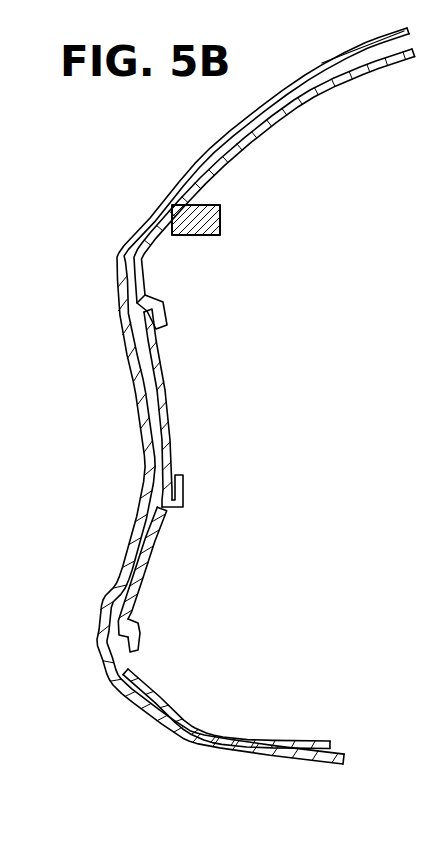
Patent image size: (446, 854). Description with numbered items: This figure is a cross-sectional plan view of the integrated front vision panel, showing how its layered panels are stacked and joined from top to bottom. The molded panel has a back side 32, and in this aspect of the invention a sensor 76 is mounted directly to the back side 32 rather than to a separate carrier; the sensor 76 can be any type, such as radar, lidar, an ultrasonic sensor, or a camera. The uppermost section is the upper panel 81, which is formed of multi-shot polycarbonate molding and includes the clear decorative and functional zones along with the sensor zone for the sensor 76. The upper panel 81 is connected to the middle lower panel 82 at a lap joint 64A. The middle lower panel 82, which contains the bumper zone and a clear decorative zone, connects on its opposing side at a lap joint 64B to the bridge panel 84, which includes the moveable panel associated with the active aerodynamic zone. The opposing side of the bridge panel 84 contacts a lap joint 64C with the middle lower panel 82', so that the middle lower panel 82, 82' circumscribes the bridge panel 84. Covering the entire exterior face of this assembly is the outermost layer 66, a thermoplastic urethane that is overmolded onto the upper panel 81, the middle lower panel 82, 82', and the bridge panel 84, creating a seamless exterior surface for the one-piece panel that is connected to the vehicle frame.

The back side 32 is at (326, 400).
The outermost layer 66 is at (103, 660).
The upper panel 81 is at (241, 169).
The sensor 76 is at (220, 218).
The lap joint 64A is at (189, 307).
The middle lower panel 82 is at (197, 408).
The lap joint 64B is at (205, 483).
The bridge panel 84 is at (138, 612).
The lap joint 64C is at (159, 632).
The middle lower panel 82' is at (236, 704).